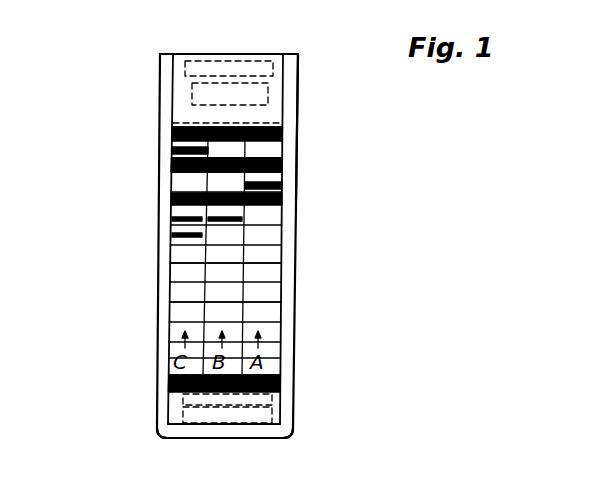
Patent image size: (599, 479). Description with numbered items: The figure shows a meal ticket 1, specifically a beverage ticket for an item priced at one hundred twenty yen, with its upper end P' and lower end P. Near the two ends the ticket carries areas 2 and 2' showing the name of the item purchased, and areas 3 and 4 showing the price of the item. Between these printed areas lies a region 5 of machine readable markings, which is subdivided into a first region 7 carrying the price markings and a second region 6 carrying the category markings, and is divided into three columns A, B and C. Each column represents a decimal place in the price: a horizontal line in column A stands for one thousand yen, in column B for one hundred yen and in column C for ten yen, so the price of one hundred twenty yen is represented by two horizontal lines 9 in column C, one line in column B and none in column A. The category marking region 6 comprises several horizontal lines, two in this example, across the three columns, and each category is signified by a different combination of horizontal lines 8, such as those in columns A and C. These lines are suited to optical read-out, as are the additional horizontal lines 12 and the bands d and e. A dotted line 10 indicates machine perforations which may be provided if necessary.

The ticket 1 is at (102, 118).
The area showing the name of the item purchased 2 is at (229, 49).
The area showing the name of the item purchased 2' is at (251, 400).
The area showing the price of the item 3 is at (270, 90).
The area showing the price of the item 4 is at (280, 427).
The region of machine readable markings 5 is at (122, 178).
The category marking region 6 is at (158, 140).
The price marking region 7 is at (153, 212).
The horizontal lines 8 is at (173, 148).
The horizontal lines 9 is at (195, 237).
The dotted line 10 is at (297, 124).
The horizontal line 12 is at (293, 128).
The band d is at (287, 158).
The mark e is at (285, 178).
The lower end of ticket P is at (225, 451).
The upper end of ticket P' is at (229, 34).